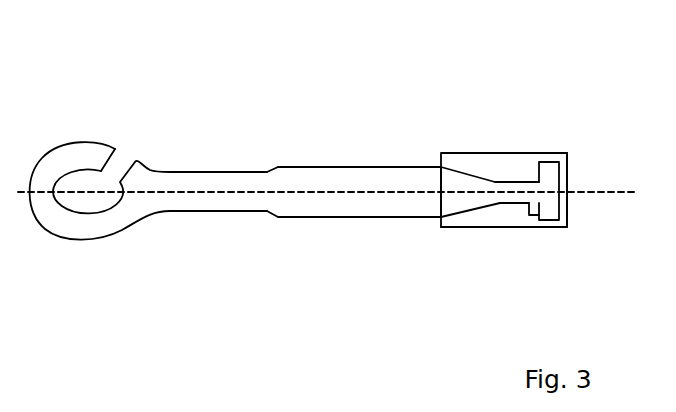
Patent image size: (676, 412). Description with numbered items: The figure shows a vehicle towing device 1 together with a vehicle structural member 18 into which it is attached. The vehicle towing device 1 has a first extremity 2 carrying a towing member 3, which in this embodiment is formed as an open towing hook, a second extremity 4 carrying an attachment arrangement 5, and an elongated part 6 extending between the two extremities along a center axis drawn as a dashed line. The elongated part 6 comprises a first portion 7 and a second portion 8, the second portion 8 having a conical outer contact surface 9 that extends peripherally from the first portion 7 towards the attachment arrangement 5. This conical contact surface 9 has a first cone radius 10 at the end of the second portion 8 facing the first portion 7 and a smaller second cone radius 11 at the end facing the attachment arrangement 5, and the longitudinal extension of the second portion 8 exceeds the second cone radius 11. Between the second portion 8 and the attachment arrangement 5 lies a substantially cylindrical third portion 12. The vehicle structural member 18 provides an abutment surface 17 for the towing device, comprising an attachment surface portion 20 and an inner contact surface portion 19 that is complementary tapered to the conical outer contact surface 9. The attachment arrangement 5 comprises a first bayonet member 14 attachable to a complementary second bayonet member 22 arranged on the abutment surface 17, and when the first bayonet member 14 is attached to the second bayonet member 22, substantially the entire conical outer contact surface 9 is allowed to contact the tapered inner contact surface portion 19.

The vehicle towing device 1 is at (293, 112).
The first extremity 2 is at (73, 257).
The towing member 3 is at (80, 148).
The second extremity 4 is at (580, 231).
The attachment arrangement 5 is at (549, 136).
The elongated part 6 is at (342, 300).
The first portion 7 is at (280, 236).
The second portion 8 is at (462, 221).
The conical outer contact surface 9 is at (473, 203).
The first cone radius 10 is at (441, 172).
The second cone radius 11 is at (496, 190).
The third portion 12 is at (502, 210).
The first bayonet member 14 is at (553, 179).
The abutment surface 17 is at (508, 157).
The vehicle structural member 18 is at (567, 202).
The inner contact surface portion 19 is at (457, 164).
The attachment surface portion 20 is at (527, 164).
The second bayonet member 22 is at (530, 223).